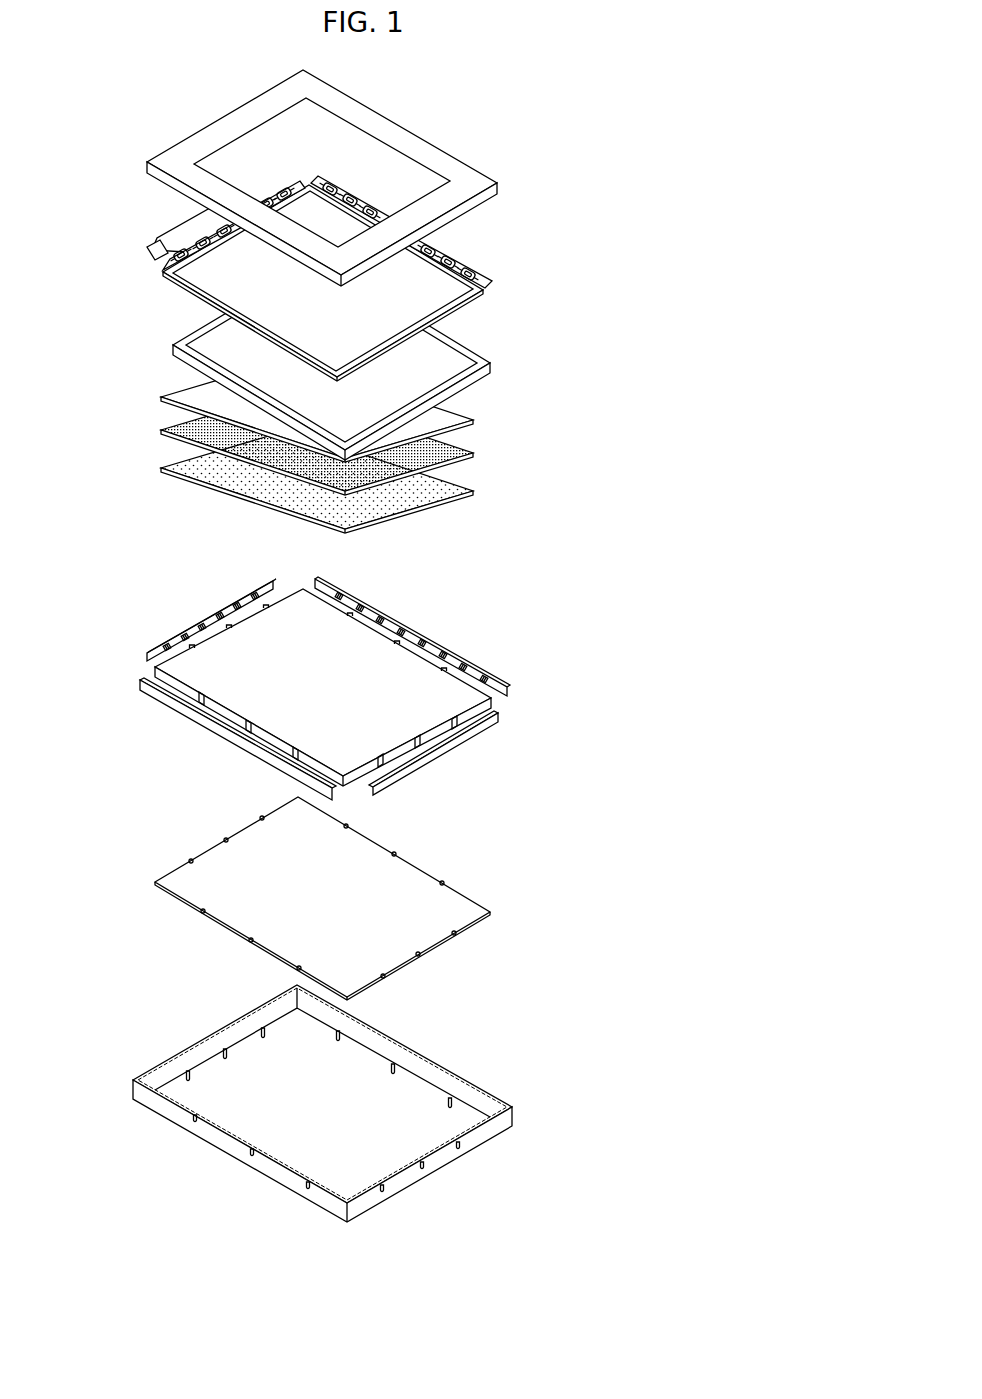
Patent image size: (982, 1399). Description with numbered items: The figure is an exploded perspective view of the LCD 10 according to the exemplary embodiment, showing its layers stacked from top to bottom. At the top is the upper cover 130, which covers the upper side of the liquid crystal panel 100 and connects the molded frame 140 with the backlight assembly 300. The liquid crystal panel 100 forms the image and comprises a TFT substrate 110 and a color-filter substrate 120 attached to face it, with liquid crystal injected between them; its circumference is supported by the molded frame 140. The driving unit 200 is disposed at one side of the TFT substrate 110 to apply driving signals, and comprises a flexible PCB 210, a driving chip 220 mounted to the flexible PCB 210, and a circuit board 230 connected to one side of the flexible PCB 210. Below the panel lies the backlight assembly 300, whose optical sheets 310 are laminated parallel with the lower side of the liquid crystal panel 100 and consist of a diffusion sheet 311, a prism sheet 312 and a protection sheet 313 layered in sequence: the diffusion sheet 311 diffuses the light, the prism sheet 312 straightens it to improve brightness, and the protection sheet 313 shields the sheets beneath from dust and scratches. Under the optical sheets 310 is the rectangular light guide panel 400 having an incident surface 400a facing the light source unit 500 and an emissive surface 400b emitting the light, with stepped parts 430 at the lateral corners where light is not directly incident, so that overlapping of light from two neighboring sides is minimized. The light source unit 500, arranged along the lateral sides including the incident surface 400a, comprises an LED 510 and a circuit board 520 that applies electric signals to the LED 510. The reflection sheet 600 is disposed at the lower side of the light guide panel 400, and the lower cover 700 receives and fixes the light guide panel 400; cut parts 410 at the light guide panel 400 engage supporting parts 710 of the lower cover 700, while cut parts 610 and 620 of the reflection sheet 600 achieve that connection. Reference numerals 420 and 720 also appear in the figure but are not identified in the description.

The liquid crystal display 10 is at (537, 147).
The liquid crystal panel 100 is at (370, 278).
The thin film transistor substrate 110 is at (470, 300).
The color-filter substrate 120 is at (482, 289).
The upper cover 130 is at (497, 187).
The molded frame 140 is at (488, 365).
The driving unit 200 is at (175, 233).
The flexible printed circuit board 210 is at (170, 257).
The driving chip 220 is at (160, 260).
The circuit board 230 is at (163, 237).
The backlight assembly 300 is at (608, 452).
The optical sheets 310 is at (375, 446).
The diffusion sheet 311 is at (460, 492).
The prism sheet 312 is at (460, 455).
The protection sheet 313 is at (463, 417).
The light guide panel 400 is at (353, 683).
The incident surface 400a is at (465, 717).
The emissive surface 400b is at (408, 725).
The cut parts 410 is at (400, 640).
The light source circuit board 420 is at (460, 658).
The stepped parts 430 is at (293, 585).
The light source unit 500 is at (193, 598).
The light emitting diode 510 is at (189, 620).
The circuit board 520 is at (216, 615).
The reflection sheet 600 is at (329, 898).
The cut part 610 is at (398, 855).
The cut part 620 is at (452, 888).
The lower cover 700 is at (322, 1102).
The supporting parts 710 is at (400, 1065).
The coupling protrusion 720 is at (452, 1100).